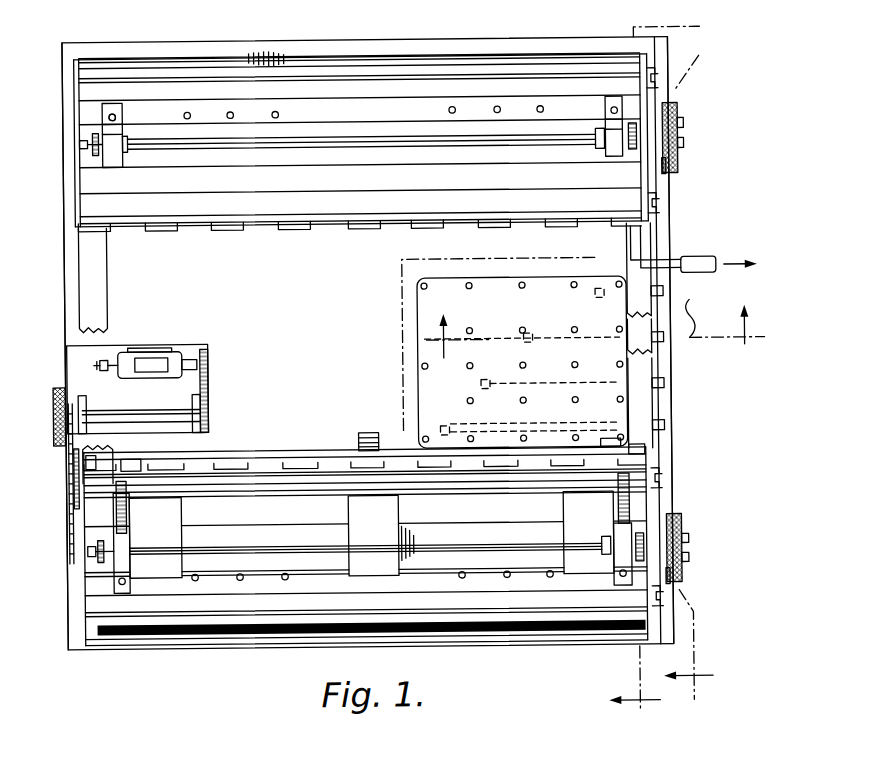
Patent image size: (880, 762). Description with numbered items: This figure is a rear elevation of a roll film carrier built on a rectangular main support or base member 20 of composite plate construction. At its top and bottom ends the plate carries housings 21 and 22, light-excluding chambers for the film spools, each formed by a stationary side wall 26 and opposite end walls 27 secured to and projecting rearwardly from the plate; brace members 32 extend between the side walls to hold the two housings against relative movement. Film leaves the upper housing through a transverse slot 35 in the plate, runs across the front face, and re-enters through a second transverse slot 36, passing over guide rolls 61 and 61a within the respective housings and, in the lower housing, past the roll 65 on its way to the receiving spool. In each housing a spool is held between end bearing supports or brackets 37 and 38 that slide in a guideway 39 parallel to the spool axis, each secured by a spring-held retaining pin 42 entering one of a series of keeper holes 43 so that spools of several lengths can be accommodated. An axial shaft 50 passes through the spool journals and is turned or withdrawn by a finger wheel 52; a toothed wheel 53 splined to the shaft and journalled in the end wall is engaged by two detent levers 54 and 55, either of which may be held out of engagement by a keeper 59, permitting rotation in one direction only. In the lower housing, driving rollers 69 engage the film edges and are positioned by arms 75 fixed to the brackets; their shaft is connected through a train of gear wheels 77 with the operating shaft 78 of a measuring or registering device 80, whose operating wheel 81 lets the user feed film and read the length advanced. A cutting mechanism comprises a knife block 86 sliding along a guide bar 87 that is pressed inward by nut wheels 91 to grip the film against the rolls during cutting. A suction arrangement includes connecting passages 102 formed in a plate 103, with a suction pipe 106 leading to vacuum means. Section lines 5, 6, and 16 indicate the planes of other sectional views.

The section line 5- 5 is at (662, 371).
The section line 6- 6 is at (706, 374).
The section line 16- 16 is at (605, 328).
The main support or base member 20 is at (152, 260).
The housing 21 is at (391, 158).
The housing 22 is at (278, 604).
The stationary side wall 26 is at (330, 228).
The end walls 27 is at (77, 203).
The brace members 32 is at (104, 290).
The transverse slot 35 is at (320, 30).
The second transverse slot 36 is at (533, 634).
The end bearing support or bracket 37 is at (118, 150).
The end bearing support or bracket 38 is at (617, 150).
The guideway 39 is at (462, 529).
The retaining pin 42 is at (120, 114).
The keeper holes 43 is at (275, 110).
The axial shaft 50 is at (276, 140).
The finger wheel 52 is at (682, 108).
The toothed wheel 53 is at (686, 162).
The detent lever 54 is at (680, 176).
The detent lever 55 is at (686, 122).
The keeper 59 is at (662, 74).
The guide roll 61 is at (173, 66).
The guide roll 61a is at (154, 624).
The roll 65 is at (256, 484).
The driving rollers 69 is at (136, 452).
The arms 75 is at (154, 496).
The train of gear wheels 77 is at (70, 456).
The operating shaft 78 is at (148, 402).
The measuring or registering device 80 is at (156, 347).
The operating or finger wheel 81 is at (60, 384).
The knife holder or block 86 is at (382, 420).
The guide bar 87 is at (306, 456).
The finger wheels or nuts 91 is at (660, 452).
The connecting passage 102 is at (604, 300).
The block or plate 103 is at (432, 291).
The suction hose or pipe 106 is at (688, 262).